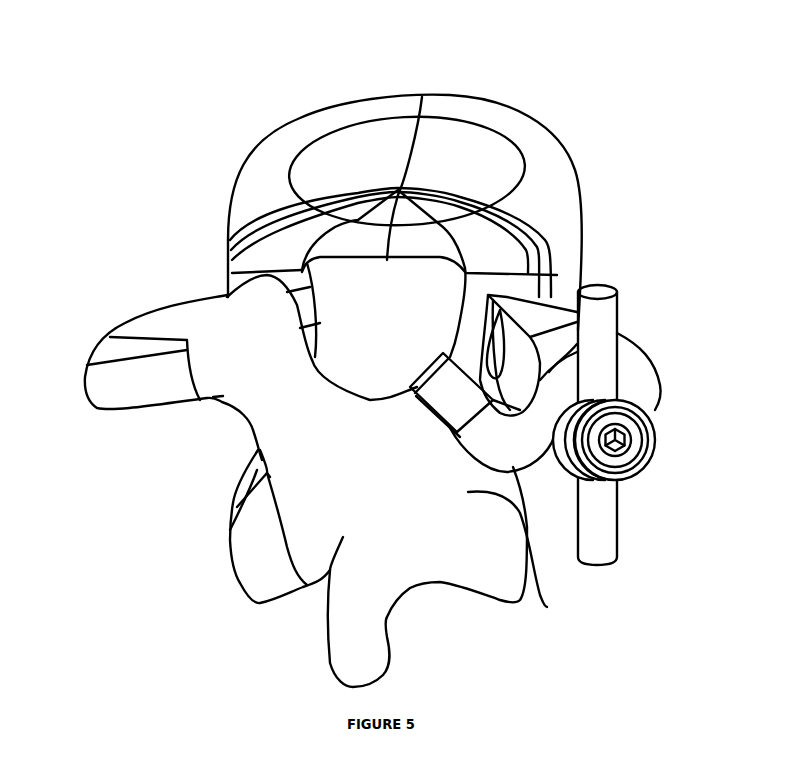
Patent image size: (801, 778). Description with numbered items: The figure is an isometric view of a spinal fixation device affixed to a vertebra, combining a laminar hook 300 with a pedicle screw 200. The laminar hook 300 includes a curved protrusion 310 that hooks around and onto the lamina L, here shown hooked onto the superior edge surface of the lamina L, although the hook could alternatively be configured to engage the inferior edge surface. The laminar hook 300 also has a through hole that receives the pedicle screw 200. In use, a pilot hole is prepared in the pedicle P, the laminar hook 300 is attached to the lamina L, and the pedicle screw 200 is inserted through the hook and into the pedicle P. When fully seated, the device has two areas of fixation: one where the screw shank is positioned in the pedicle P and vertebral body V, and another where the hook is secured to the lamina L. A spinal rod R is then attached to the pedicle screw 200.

The vertebral body V is at (291, 124).
The lamina L is at (517, 559).
The pedicle P is at (638, 370).
The spinal rod R is at (603, 317).
The pedicle screw 200 is at (668, 443).
The laminar hook 300 is at (538, 470).
The curved protrusion 310 is at (466, 399).